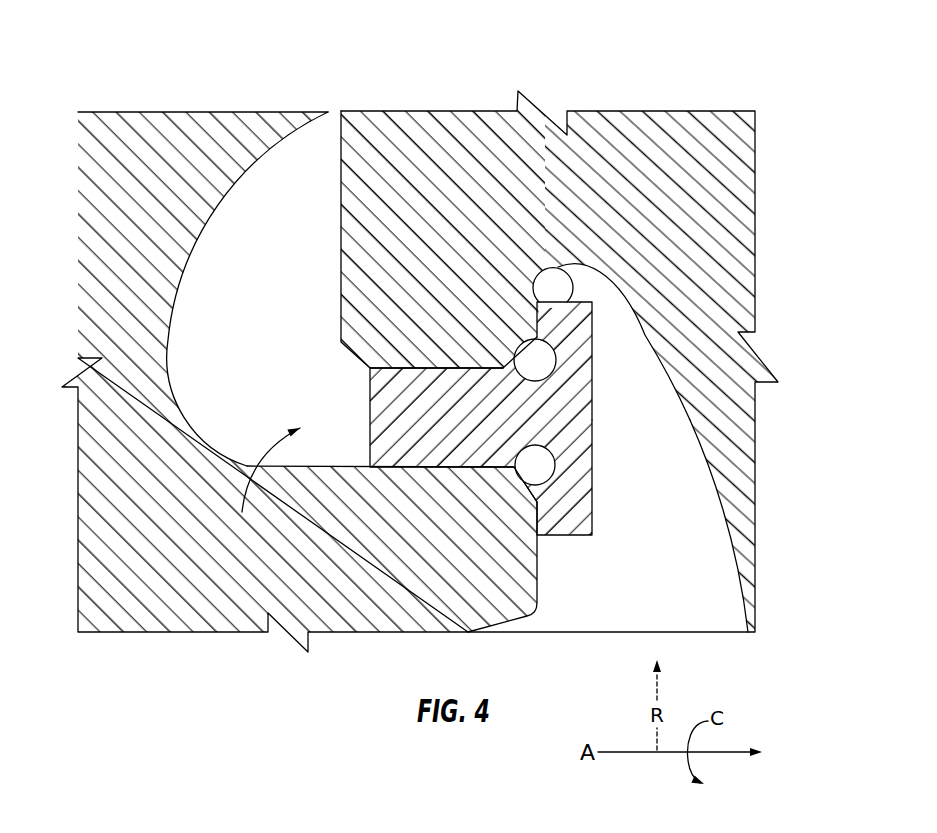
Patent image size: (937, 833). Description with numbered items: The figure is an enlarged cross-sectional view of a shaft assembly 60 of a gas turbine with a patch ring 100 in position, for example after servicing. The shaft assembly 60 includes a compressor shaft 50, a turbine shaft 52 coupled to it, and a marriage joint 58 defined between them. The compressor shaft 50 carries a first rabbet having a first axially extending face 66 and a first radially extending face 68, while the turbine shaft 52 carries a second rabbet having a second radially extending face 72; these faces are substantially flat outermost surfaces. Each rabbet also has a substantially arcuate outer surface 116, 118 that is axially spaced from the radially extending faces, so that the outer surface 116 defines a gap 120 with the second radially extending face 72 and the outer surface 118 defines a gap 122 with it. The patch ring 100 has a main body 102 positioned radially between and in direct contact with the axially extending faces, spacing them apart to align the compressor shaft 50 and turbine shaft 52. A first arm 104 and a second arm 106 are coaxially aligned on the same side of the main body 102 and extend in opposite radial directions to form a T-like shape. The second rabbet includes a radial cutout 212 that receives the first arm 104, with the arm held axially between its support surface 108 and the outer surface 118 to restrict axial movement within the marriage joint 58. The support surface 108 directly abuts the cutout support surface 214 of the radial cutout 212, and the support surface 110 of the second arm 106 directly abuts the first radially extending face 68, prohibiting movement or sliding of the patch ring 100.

The compressor shaft 50 is at (278, 382).
The turbine shaft 52 is at (577, 361).
The marriage joint 58 is at (261, 490).
The shaft assembly 60 is at (126, 48).
The first axially extending face 66 is at (402, 467).
The first radially extending face 68 is at (537, 562).
The second radially extending face 72 is at (342, 238).
The patch ring 100 is at (519, 403).
The main body 102 is at (447, 392).
The first arm 104 is at (565, 323).
The second arm 106 is at (580, 485).
The support surface 108 is at (567, 292).
The support surface 110 is at (557, 525).
The outer surface 116 is at (170, 327).
The outer surface 118 is at (708, 461).
The gap 120 is at (293, 381).
The gap 122 is at (657, 428).
The radial cutout 212 is at (605, 268).
The cutout support surface 214 is at (530, 321).